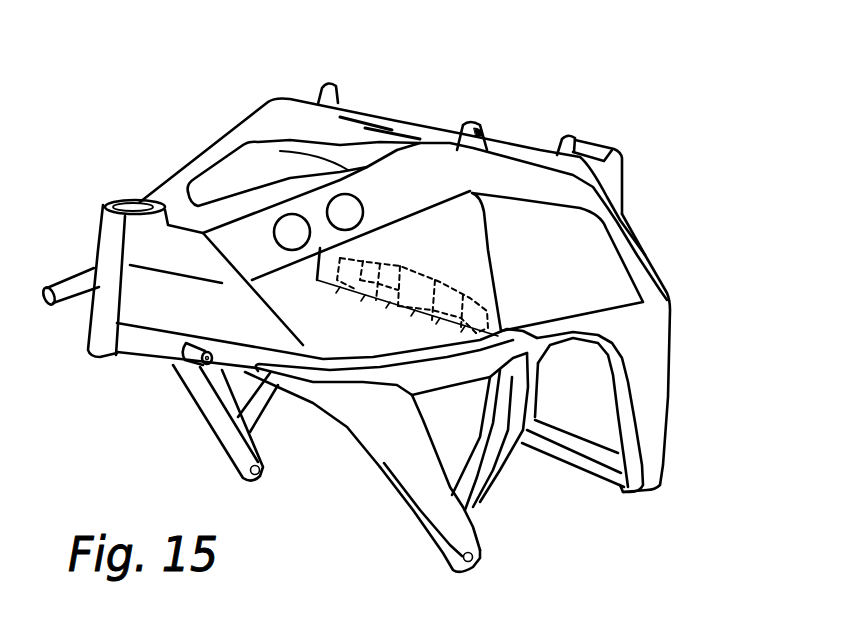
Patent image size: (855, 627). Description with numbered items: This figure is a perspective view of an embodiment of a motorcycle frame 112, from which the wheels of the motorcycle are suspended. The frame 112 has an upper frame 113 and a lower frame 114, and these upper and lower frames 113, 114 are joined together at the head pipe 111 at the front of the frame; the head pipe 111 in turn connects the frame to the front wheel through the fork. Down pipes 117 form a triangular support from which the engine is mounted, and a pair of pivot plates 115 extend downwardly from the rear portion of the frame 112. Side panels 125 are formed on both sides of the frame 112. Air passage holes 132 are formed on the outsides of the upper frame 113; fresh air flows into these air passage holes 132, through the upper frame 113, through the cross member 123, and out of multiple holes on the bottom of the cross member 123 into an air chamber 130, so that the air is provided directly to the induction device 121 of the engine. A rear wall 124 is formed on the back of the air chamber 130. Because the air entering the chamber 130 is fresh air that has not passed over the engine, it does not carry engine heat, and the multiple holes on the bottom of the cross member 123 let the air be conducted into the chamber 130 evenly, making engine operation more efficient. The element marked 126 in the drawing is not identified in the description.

The head pipe 111 is at (100, 240).
The frame 112 is at (494, 107).
The upper frame 113 is at (245, 115).
The lower frame 114 is at (443, 385).
The pivot plates 115 is at (540, 385).
The down pipes 117 is at (206, 412).
The induction device 121 is at (407, 288).
The cross member 123 is at (370, 142).
The rear wall 124 is at (485, 248).
The side panels 125 is at (610, 253).
The lower side rail 126 is at (353, 340).
The air chamber 130 is at (302, 305).
The air passage holes 132 is at (291, 214).